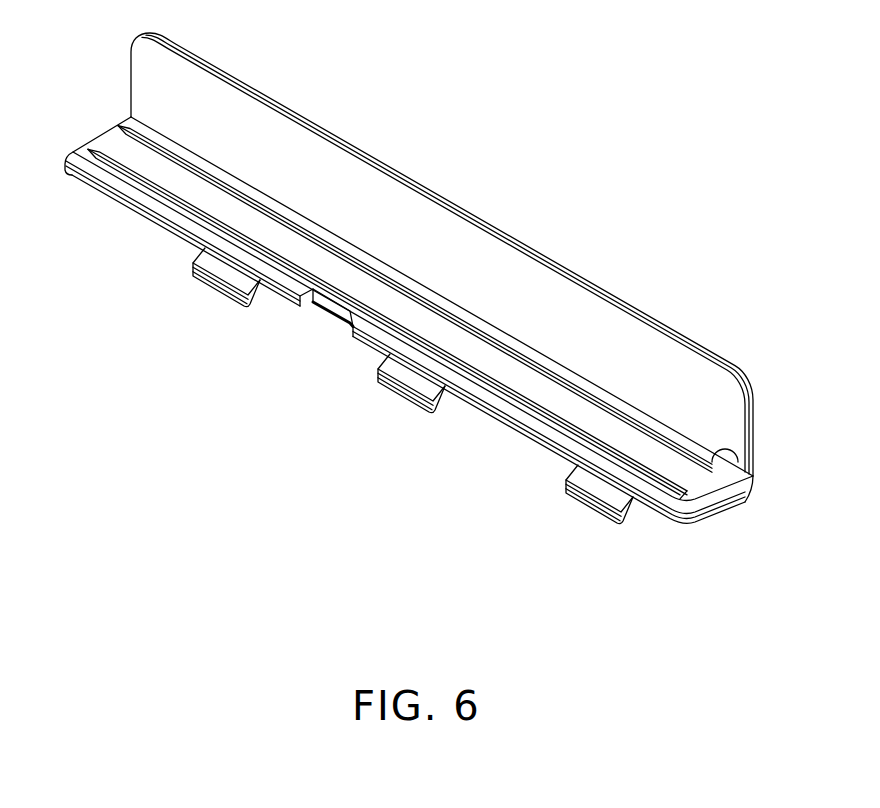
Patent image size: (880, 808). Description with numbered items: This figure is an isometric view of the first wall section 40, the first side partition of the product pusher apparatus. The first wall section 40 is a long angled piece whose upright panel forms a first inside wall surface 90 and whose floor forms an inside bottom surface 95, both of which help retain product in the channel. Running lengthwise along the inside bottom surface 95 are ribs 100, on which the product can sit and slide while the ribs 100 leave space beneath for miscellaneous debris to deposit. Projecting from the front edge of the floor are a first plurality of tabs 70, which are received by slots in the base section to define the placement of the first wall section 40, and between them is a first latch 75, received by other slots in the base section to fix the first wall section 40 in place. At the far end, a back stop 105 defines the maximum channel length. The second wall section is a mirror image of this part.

The first wall section 40 is at (90, 300).
The first plurality of tabs 70 is at (214, 294).
The first latch 75 is at (327, 315).
The first inside wall surface 90 is at (240, 115).
The inside bottom surface 95 is at (105, 142).
The ribs 100 is at (553, 383).
The back stop 105 is at (697, 522).